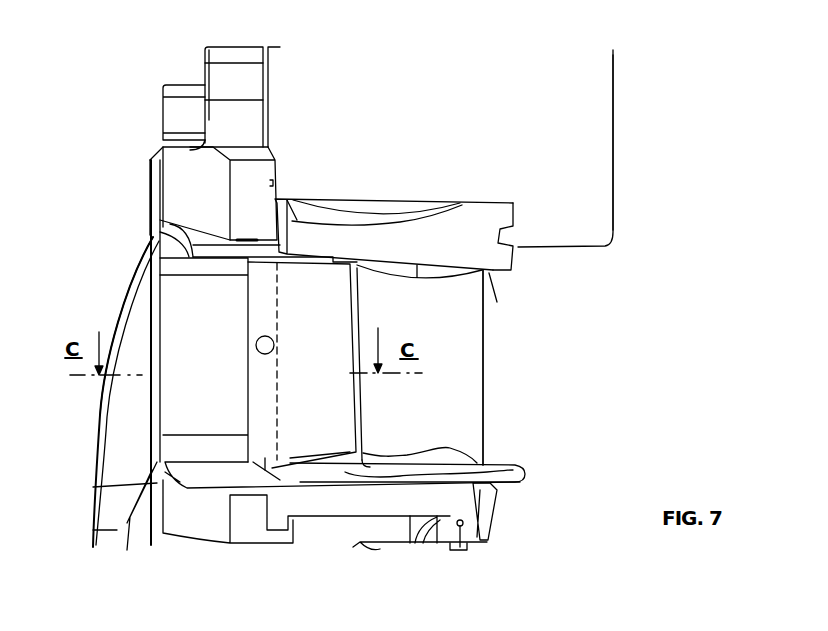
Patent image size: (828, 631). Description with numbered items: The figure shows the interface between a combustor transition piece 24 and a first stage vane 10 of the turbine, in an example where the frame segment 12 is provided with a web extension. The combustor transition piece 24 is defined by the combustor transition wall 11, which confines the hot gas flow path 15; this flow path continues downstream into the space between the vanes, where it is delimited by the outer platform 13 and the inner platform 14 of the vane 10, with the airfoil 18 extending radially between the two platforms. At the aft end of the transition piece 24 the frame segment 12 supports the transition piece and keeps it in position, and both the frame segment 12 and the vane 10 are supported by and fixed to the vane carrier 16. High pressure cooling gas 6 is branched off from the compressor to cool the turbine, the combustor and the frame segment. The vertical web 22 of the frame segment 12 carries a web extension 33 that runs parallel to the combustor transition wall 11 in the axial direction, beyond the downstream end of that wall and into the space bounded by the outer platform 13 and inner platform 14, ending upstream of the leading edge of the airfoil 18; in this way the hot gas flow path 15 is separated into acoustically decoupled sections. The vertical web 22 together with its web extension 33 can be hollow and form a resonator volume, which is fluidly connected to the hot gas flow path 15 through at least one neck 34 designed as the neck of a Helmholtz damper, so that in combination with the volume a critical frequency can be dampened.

The high pressure cooling gas 6 is at (413, 180).
The first stage vane 10 is at (560, 324).
The combustor transition wall 11 is at (158, 230).
The frame segment 12 is at (213, 180).
The outer platform 13 is at (455, 252).
The inner platform 14 is at (450, 495).
The hot gas flow path 15 is at (108, 317).
The vane carrier 16 is at (517, 109).
The airfoil 18 is at (465, 343).
The vertical web 22 is at (235, 400).
The combustor transition piece 24 is at (130, 432).
The web extension 33 is at (317, 440).
The neck 34 is at (255, 342).